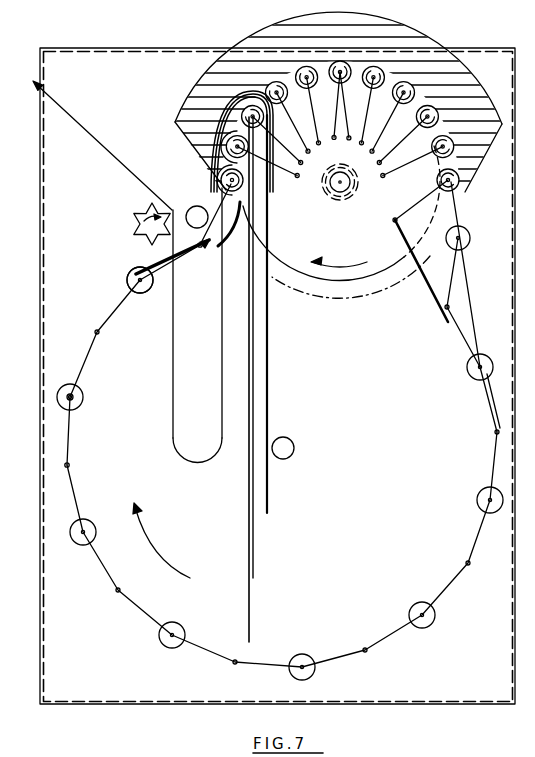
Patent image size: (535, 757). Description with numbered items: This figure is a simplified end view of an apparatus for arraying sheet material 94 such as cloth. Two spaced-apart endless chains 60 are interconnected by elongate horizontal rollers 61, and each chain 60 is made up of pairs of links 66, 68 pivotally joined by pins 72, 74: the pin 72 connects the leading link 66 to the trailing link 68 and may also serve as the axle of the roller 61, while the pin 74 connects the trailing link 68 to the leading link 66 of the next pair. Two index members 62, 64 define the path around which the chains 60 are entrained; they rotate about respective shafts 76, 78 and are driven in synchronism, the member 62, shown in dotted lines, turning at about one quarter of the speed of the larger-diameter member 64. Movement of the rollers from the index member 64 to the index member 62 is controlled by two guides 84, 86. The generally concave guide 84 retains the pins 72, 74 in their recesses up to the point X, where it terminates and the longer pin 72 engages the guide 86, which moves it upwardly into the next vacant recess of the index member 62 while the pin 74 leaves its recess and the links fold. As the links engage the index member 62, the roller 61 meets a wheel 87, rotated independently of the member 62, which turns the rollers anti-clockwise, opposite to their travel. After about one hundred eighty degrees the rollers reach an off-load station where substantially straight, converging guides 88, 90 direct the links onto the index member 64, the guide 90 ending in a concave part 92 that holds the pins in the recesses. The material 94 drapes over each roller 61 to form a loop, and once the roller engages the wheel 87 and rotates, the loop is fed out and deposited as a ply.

The endless chain 60 is at (122, 293).
The roller 61 is at (143, 293).
The index member 62 is at (383, 291).
The index member 64 is at (402, 406).
The leading link 66 is at (86, 364).
The trailing link 68 is at (69, 432).
The pin 72 is at (83, 397).
The pin 74 is at (68, 466).
The shaft 76 is at (345, 193).
The shaft 78 is at (289, 456).
The guide 84 is at (147, 264).
The guide 86 is at (229, 246).
The wheel 87 is at (313, 251).
The guide 88 is at (440, 311).
The guide 90 is at (477, 305).
The concave part 92 is at (489, 402).
The sheet material 94 is at (100, 141).
The point X is at (203, 252).